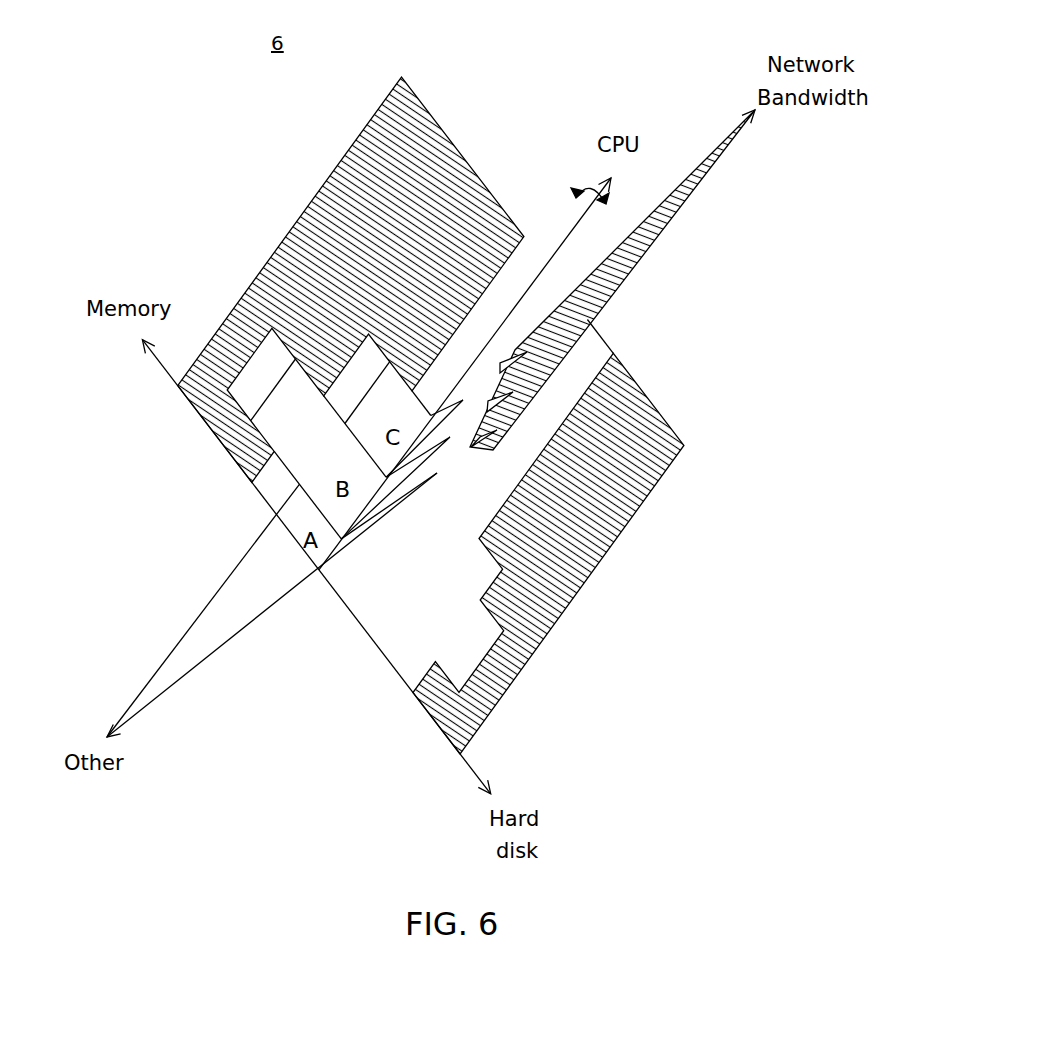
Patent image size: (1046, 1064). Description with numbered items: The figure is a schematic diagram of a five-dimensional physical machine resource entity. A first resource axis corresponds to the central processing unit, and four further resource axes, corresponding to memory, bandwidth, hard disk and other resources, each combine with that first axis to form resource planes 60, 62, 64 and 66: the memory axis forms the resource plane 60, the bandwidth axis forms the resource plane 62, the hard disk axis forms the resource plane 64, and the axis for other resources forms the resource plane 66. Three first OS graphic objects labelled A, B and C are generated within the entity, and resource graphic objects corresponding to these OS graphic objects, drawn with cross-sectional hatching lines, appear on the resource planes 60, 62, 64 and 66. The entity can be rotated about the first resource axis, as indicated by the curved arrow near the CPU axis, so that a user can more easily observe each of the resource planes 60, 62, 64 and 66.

The resource plane 60 is at (312, 199).
The resource plane 62 is at (668, 224).
The resource plane 64 is at (586, 576).
The resource plane 66 is at (226, 610).